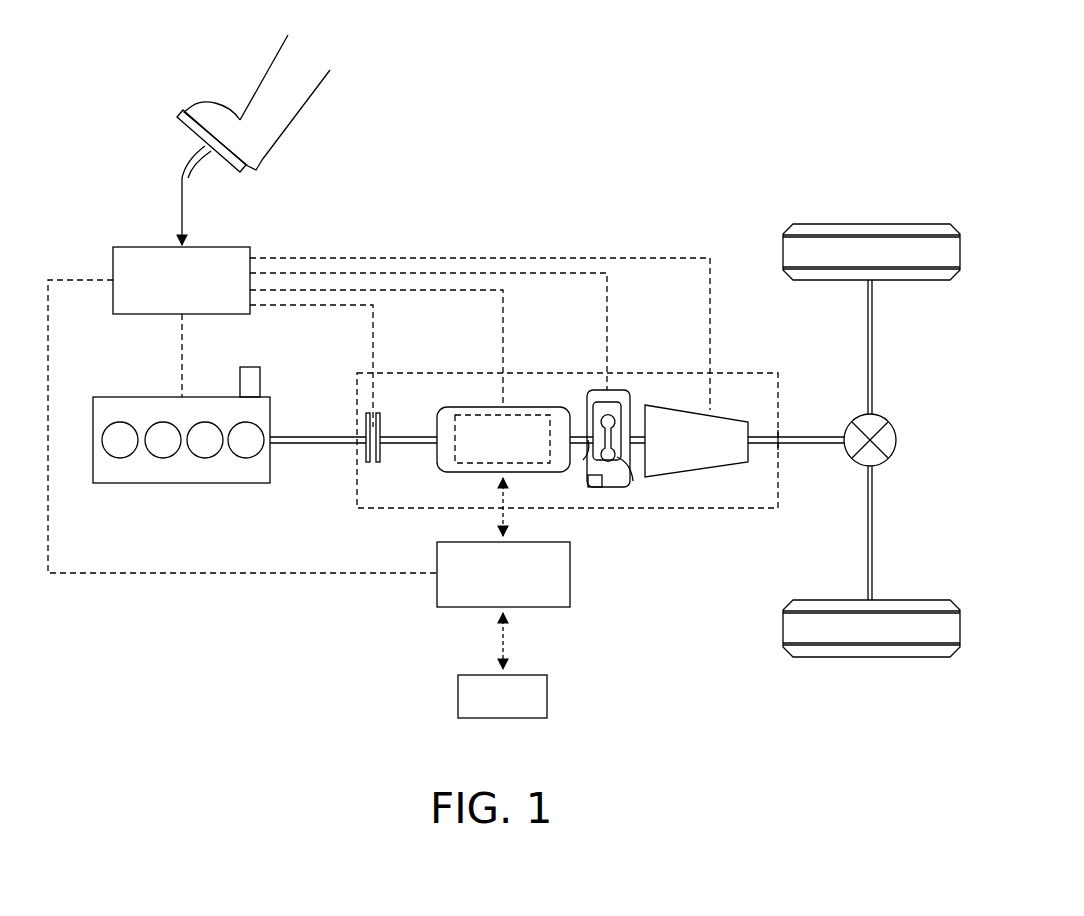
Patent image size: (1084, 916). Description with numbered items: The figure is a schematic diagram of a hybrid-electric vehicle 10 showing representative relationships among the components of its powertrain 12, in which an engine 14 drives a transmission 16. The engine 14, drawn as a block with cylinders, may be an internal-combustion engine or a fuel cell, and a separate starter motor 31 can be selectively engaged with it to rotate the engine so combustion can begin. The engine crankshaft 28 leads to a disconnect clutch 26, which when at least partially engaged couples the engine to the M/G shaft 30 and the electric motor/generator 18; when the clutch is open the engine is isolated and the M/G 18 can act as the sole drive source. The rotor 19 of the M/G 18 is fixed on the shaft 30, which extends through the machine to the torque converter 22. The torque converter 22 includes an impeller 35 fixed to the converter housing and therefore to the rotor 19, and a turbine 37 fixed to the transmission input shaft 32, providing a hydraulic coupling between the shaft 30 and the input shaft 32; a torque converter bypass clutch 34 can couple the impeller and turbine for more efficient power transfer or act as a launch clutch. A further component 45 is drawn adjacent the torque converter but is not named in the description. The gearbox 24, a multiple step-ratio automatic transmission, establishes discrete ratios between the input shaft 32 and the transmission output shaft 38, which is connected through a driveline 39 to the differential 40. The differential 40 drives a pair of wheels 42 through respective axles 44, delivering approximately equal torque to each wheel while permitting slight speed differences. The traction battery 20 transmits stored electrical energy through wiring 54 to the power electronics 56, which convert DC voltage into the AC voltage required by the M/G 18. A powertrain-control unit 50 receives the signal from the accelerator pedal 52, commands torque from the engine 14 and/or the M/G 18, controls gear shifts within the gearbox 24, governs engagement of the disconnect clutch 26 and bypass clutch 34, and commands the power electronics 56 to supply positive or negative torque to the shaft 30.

The hybrid-electric vehicle 10 is at (732, 154).
The powertrain 12 is at (302, 616).
The engine 14 is at (112, 397).
The transmission 16 is at (540, 373).
The electric motor/generator 18 is at (480, 407).
The rotor 19 is at (468, 472).
The traction battery 20 is at (456, 698).
The torque converter 22 is at (603, 488).
The gearbox 24 is at (690, 477).
The disconnect clutch 26 is at (368, 462).
The crankshaft 28 is at (334, 437).
The M/G shaft 30 is at (408, 437).
The starter motor 31 is at (260, 380).
The transmission input shaft 32 is at (630, 432).
The torque converter bypass clutch 34 is at (604, 394).
The impeller 35 is at (631, 480).
The turbine 37 is at (590, 458).
The transmission output shaft 38 is at (762, 437).
The driveline 39 is at (812, 437).
The differential 40 is at (897, 441).
The wheels 42 is at (840, 223).
The axles 44 is at (873, 350).
The turbine shaft 45 is at (600, 492).
The powertrain-control unit 50 is at (119, 247).
The accelerator pedal 52 is at (178, 130).
The wiring 54 is at (501, 639).
The power electronics 56 is at (570, 573).